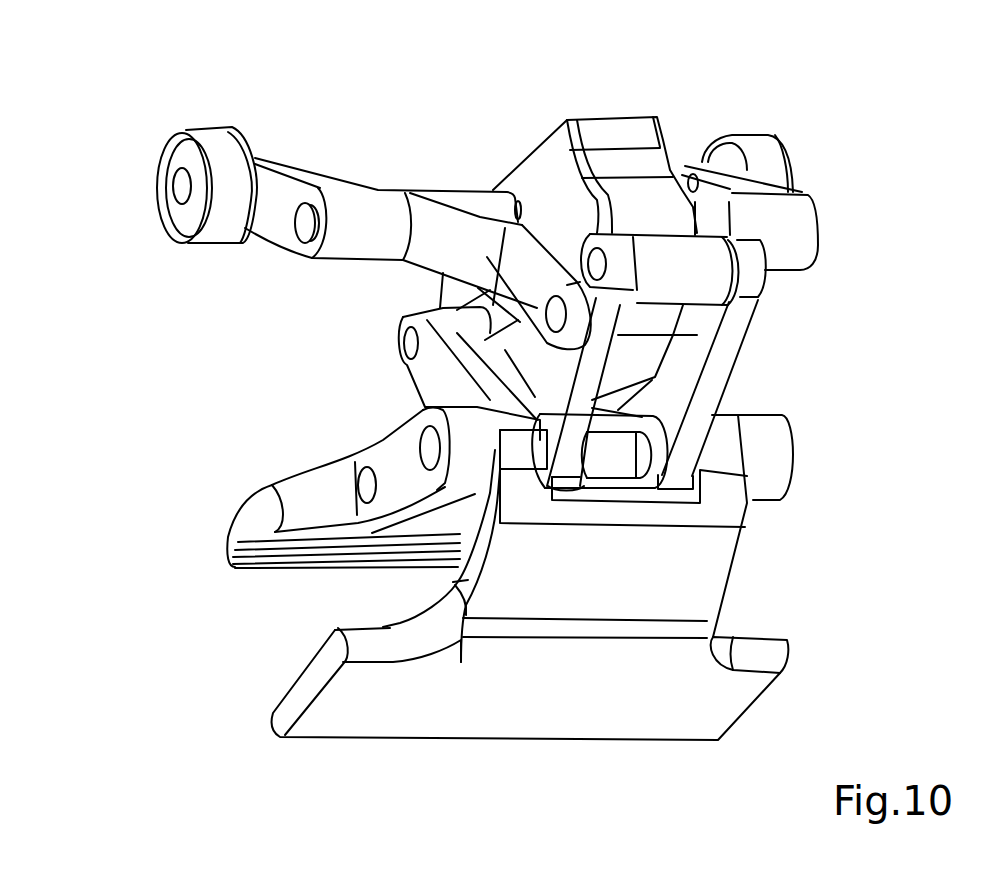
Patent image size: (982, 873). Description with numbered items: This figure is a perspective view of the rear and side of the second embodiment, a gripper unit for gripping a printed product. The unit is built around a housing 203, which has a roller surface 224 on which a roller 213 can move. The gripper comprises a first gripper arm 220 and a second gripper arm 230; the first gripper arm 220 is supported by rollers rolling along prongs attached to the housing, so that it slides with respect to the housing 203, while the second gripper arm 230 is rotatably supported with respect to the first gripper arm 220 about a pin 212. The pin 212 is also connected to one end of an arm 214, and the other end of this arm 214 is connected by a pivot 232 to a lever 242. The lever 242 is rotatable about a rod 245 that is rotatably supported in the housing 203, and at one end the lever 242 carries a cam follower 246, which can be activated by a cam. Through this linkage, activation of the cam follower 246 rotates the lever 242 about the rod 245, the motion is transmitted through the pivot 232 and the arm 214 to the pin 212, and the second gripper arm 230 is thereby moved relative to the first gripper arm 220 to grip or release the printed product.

The cam follower 246 is at (218, 143).
The rod 245 is at (298, 215).
The lever 242 is at (272, 217).
The pivot 232 is at (547, 315).
The housing 203 is at (607, 137).
The roller surface 224 is at (660, 207).
The roller 213 is at (697, 277).
The arm 214 is at (553, 393).
The pin 212 is at (430, 440).
The second gripper arm 230 is at (257, 520).
The first gripper arm 220 is at (350, 713).